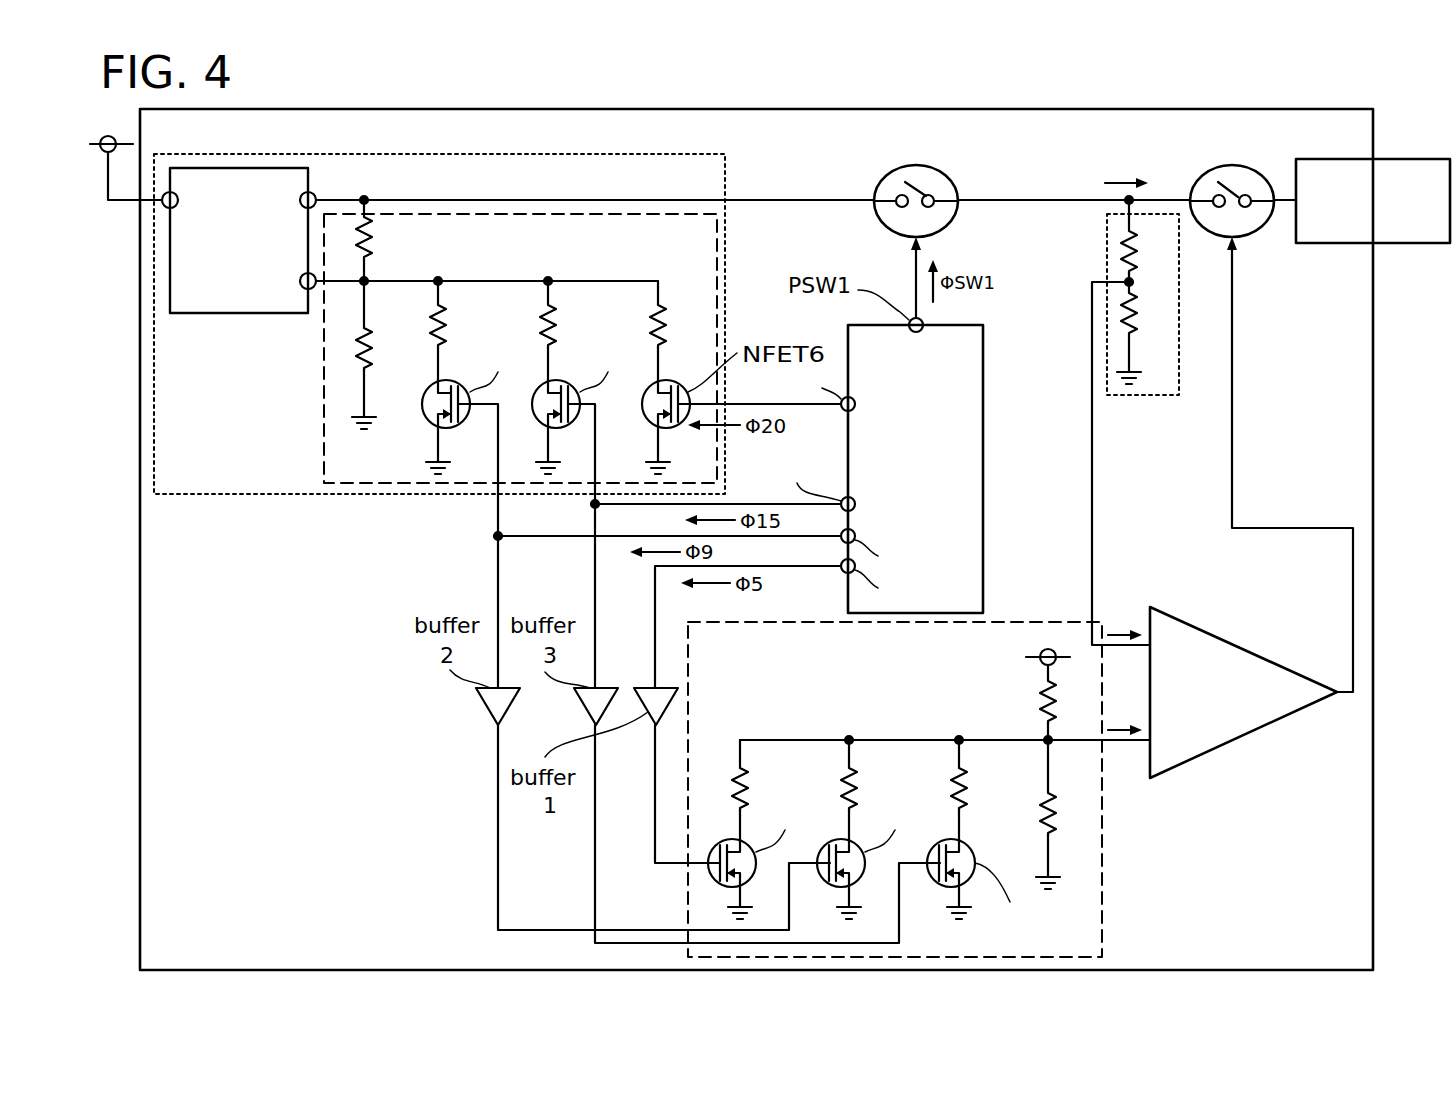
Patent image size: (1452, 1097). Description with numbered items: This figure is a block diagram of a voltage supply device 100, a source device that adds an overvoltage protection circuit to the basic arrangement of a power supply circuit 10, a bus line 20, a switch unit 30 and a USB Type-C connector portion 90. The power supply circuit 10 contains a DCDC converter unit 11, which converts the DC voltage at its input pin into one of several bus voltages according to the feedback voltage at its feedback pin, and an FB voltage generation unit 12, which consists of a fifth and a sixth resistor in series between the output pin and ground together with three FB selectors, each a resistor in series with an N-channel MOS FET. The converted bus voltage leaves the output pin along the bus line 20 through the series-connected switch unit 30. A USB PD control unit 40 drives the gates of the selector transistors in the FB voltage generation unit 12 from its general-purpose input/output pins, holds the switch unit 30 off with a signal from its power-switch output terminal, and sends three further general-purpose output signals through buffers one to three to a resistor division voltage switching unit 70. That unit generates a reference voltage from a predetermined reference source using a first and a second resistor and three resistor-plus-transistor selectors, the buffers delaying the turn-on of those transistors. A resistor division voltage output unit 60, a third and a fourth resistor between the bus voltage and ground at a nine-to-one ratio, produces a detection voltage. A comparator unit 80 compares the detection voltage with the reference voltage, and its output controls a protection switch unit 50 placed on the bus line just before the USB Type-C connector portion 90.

The voltage supply device 100 is at (1303, 109).
The power supply circuit 10 is at (727, 170).
The DCDC converter unit 11 is at (312, 170).
The FB voltage generation unit 12 is at (322, 401).
The bus line 20 is at (1005, 200).
The switch unit 30 is at (916, 165).
The USB PD control unit 40 is at (975, 318).
The protection switch unit 50 is at (1250, 170).
The resistor division voltage output unit 60 is at (1160, 214).
The resistor division voltage switching unit 70 is at (1022, 618).
The comparator unit 80 is at (1232, 640).
The USB Type-C connector portion 90 is at (1390, 159).